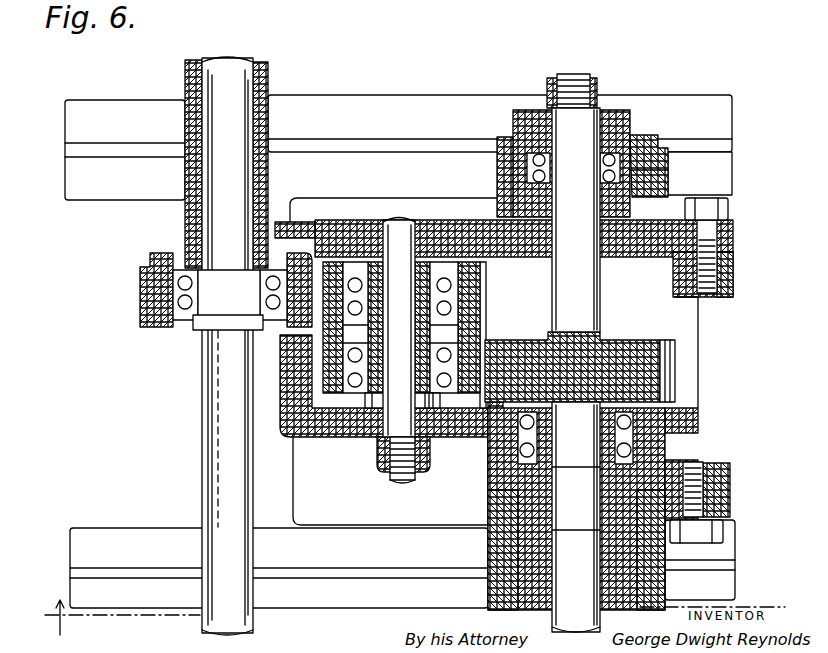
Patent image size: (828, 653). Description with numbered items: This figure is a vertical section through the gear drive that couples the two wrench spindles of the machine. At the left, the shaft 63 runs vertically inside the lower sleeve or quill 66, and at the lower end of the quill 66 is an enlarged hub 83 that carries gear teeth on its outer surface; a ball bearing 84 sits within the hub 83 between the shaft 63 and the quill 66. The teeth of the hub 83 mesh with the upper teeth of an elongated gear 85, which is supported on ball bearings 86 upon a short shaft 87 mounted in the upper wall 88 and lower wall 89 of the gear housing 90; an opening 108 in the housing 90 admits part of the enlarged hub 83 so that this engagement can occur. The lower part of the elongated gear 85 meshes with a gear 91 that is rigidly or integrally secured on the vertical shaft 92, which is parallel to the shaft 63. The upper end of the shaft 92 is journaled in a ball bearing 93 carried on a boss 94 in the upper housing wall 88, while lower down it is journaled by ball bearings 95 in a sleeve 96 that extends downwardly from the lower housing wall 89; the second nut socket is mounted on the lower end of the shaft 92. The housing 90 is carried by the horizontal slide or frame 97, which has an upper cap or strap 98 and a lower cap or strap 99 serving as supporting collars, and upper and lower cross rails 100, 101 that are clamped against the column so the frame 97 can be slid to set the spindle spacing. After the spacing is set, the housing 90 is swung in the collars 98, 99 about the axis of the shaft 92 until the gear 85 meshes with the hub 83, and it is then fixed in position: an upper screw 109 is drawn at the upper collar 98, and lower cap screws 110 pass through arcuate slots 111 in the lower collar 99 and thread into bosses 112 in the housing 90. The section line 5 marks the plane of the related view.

The section line 5- 5 is at (410, 616).
The shaft 63 is at (205, 431).
The lower sleeve or quill 66 is at (268, 72).
The enlarged hub 83 is at (140, 298).
The ball bearing 84 is at (182, 312).
The elongated gear 85 is at (335, 402).
The ball bearings 86 is at (444, 343).
The short shaft 87 is at (418, 250).
The upper wall 88 is at (362, 233).
The lower wall 89 is at (460, 424).
The gear housing 90 is at (287, 445).
The gear 91 is at (618, 340).
The vertical shaft 92 is at (573, 203).
The ball bearing 93 is at (668, 169).
The boss 94 is at (632, 132).
The ball bearings 95 is at (612, 433).
The sleeve 96 is at (615, 578).
The horizontal slide or frame 97 is at (401, 93).
The upper cap or strap 98 is at (500, 140).
The lower cap or strap 99 is at (490, 497).
The upper cross rail 100 is at (109, 106).
The lower cross rail 101 is at (117, 537).
The opening 108 is at (293, 233).
The bolt 109 is at (730, 210).
The lower cap screws 110 is at (718, 495).
The arcuate slots 111 is at (730, 512).
The bosses 112 is at (734, 288).